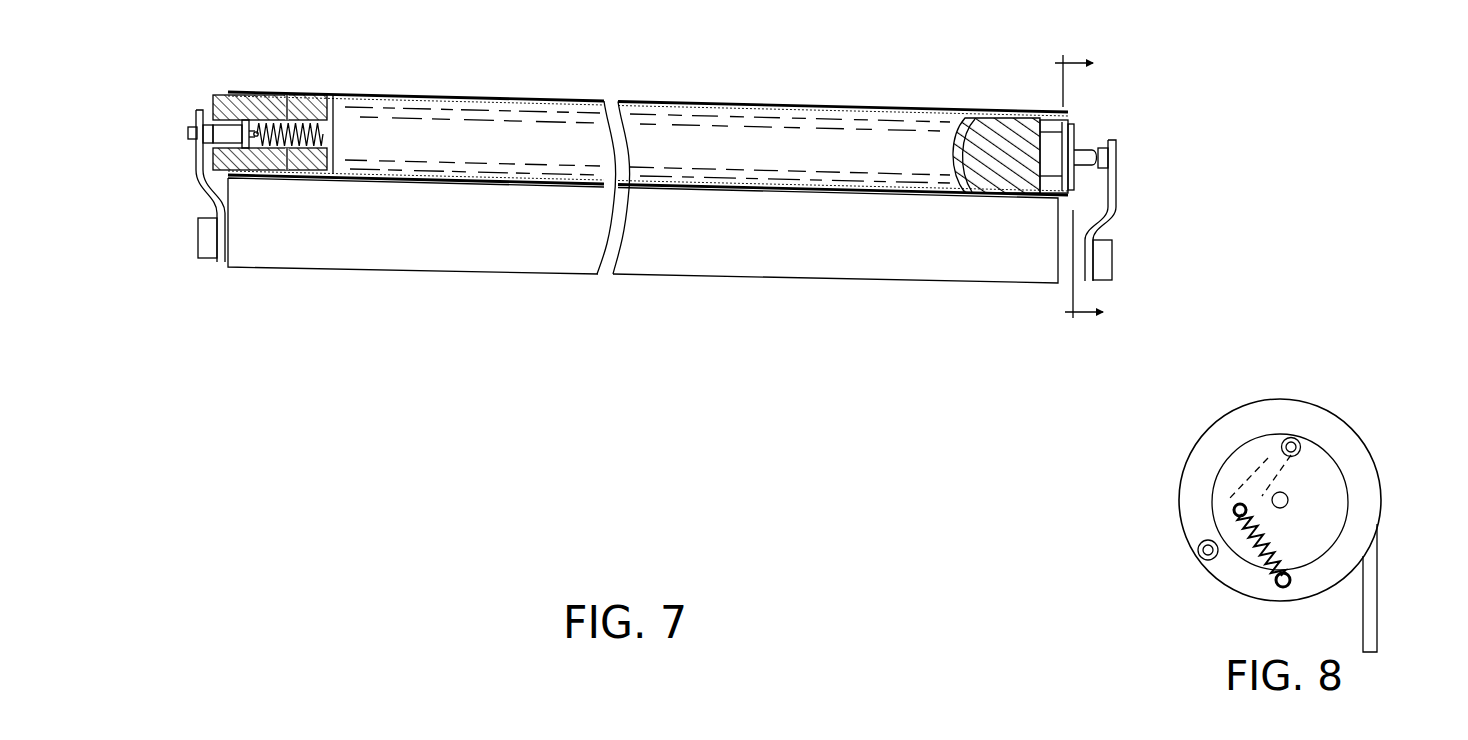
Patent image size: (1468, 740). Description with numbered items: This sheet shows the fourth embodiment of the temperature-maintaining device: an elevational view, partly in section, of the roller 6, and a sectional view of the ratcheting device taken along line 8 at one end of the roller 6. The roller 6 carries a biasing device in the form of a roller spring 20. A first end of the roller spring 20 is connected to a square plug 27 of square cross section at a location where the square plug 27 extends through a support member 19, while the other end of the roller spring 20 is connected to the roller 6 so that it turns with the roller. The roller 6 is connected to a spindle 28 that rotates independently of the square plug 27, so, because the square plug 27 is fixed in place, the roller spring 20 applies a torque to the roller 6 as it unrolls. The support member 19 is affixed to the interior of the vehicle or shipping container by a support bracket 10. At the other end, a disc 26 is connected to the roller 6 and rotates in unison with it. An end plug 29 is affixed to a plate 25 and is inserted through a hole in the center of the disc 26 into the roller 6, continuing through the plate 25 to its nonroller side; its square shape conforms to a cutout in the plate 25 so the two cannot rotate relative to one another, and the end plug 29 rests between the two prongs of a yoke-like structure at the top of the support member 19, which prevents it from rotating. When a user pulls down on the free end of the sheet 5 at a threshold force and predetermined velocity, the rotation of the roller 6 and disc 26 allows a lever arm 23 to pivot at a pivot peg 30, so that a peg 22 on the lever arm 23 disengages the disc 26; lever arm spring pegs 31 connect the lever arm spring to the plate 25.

In FIG. 7, the sheet 5 is at (310, 240).
In FIG. 8, the sheet 5 is at (1368, 614).
In FIG. 7, the roller 6 is at (262, 96).
In FIG. 7, the section line 8— 8 is at (1089, 189).
In FIG. 7, the support bracket 10 is at (205, 245).
In FIG. 7, the support member 19 is at (192, 180).
In FIG. 7, the roller spring 20 is at (290, 135).
In FIG. 8, the peg 22 is at (1293, 437).
In FIG. 8, the lever arm 23 is at (1218, 517).
In FIG. 7, the plate 25 is at (1076, 137).
In FIG. 8, the plate 25 is at (1257, 423).
In FIG. 8, the disc 26 is at (1316, 480).
In FIG. 7, the square plug 27 is at (188, 133).
In FIG. 7, the spindle 28 is at (207, 121).
In FIG. 7, the end plug 29 is at (1088, 152).
In FIG. 8, the end plug 29 is at (1290, 499).
In FIG. 8, the pivot peg 30 is at (1204, 558).
In FIG. 8, the lever arm spring pegs 31 is at (1236, 506).